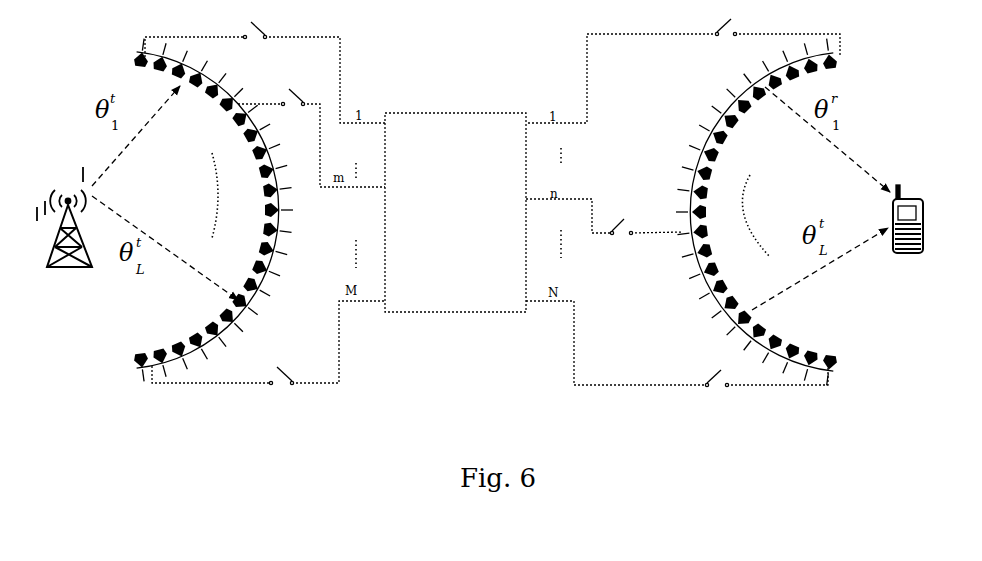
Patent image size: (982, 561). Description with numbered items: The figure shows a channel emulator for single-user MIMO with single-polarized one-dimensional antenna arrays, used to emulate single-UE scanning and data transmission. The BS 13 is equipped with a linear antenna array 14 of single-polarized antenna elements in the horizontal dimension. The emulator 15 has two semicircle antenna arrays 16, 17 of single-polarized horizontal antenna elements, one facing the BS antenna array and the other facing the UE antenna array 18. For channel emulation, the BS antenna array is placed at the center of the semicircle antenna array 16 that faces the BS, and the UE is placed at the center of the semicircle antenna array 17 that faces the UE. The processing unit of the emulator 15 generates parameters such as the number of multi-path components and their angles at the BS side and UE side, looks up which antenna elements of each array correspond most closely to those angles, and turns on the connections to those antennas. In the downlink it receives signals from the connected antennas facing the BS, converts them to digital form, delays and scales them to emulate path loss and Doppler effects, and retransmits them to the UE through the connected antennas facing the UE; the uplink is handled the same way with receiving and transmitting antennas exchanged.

The BS 13 is at (61, 236).
The linear antenna array 14 is at (61, 194).
The emulator 15 is at (455, 202).
The semicircle antenna array 16 is at (226, 210).
The semicircle antenna array 17 is at (747, 212).
The UE antenna array 18 is at (921, 219).